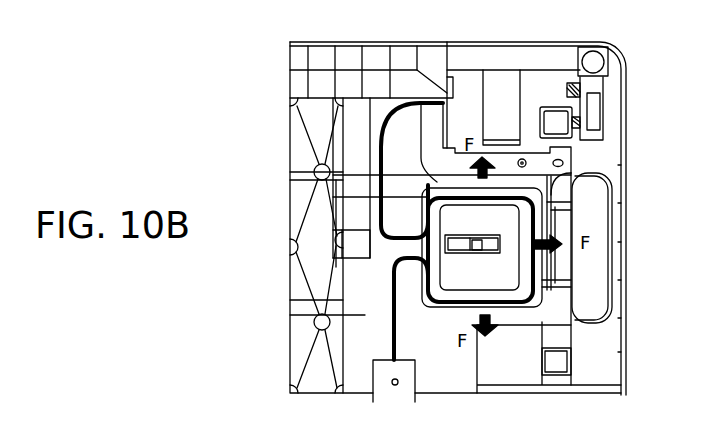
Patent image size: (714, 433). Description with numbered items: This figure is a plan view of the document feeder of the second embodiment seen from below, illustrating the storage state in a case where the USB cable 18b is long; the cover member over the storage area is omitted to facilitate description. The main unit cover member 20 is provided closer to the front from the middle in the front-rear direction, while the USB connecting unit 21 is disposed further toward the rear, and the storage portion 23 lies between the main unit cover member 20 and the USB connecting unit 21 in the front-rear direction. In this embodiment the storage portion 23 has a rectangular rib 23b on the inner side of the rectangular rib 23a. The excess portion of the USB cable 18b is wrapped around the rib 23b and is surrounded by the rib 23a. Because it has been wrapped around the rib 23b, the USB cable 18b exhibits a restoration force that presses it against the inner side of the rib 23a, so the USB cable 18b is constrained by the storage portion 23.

The main unit cover member 20 is at (467, 93).
The storage portion 23 is at (435, 180).
The rectangular rib 23a is at (430, 305).
The rectangular rib 23b is at (500, 306).
The USB cable 18b is at (390, 308).
The USB connecting unit 21 is at (378, 380).